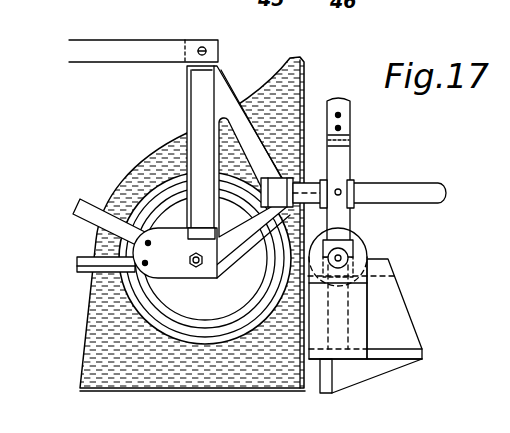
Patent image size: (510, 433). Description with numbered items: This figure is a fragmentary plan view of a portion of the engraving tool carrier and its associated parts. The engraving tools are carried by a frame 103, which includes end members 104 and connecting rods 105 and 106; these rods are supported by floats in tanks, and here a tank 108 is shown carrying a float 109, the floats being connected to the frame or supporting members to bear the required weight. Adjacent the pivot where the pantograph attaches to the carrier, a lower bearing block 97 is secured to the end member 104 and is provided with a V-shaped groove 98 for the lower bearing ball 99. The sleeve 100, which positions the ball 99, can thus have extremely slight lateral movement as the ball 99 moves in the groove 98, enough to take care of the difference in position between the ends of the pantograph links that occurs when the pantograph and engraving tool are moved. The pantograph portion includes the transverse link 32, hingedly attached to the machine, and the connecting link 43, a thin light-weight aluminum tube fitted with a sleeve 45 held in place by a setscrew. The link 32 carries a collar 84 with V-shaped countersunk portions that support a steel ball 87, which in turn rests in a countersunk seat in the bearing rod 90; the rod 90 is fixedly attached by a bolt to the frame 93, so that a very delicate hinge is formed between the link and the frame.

The transverse link 32 is at (338, 100).
The connecting link 43 is at (425, 191).
The sleeve 45 is at (352, 196).
The collar 84 is at (368, 278).
The steel ball 87 is at (366, 263).
The bearing rod 90 is at (346, 252).
The frame 93 is at (400, 307).
The lower bearing block 97 is at (260, 178).
The V-shaped groove 98 is at (232, 171).
The lower bearing ball 99 is at (340, 170).
The sleeve 100 is at (306, 176).
The frame 103 is at (120, 50).
The end member 104 is at (200, 84).
The connecting rod 105 is at (83, 262).
The connecting rod 106 is at (93, 206).
The tank 108 is at (108, 319).
The float 109 is at (205, 258).